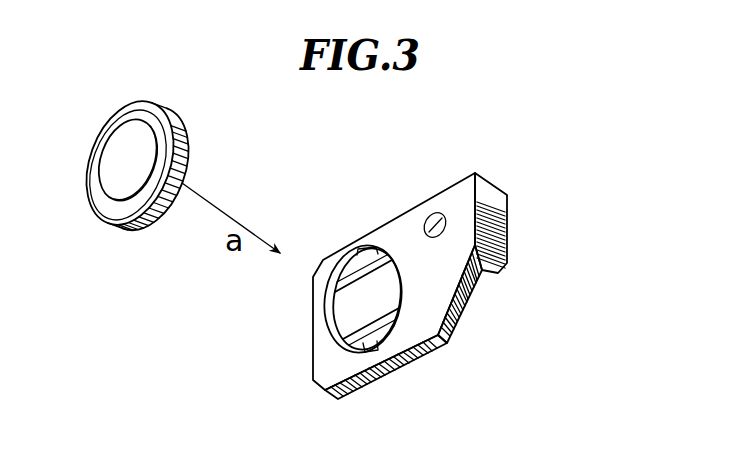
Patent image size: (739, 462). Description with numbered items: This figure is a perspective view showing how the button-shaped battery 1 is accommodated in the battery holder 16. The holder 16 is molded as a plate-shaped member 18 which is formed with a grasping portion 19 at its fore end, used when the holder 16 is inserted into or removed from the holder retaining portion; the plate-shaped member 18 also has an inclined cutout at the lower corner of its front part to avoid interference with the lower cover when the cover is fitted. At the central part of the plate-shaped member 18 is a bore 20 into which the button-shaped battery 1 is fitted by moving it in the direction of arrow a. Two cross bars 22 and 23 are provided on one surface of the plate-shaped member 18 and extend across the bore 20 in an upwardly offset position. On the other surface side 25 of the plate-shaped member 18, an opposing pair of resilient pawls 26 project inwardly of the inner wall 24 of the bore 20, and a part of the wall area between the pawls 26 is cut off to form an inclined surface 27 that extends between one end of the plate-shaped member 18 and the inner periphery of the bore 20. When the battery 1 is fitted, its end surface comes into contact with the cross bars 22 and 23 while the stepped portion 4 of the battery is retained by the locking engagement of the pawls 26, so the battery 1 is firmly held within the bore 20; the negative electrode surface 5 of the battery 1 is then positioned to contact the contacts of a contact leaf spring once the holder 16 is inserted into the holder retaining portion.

The button-shaped battery 1 is at (168, 180).
The stepped portion 4 is at (103, 207).
The negative electrode surface 5 is at (115, 148).
The holder 16 is at (430, 283).
The plate-shaped member 18 is at (458, 198).
The grasping portion 19 is at (497, 226).
The bore 20 is at (358, 307).
The cross bar 22 is at (389, 258).
The cross bar 23 is at (374, 333).
The inner wall 24 is at (348, 272).
The other surface side 25 is at (410, 314).
The resilient pawls 26 is at (368, 247).
The inclined surface 27 is at (331, 289).